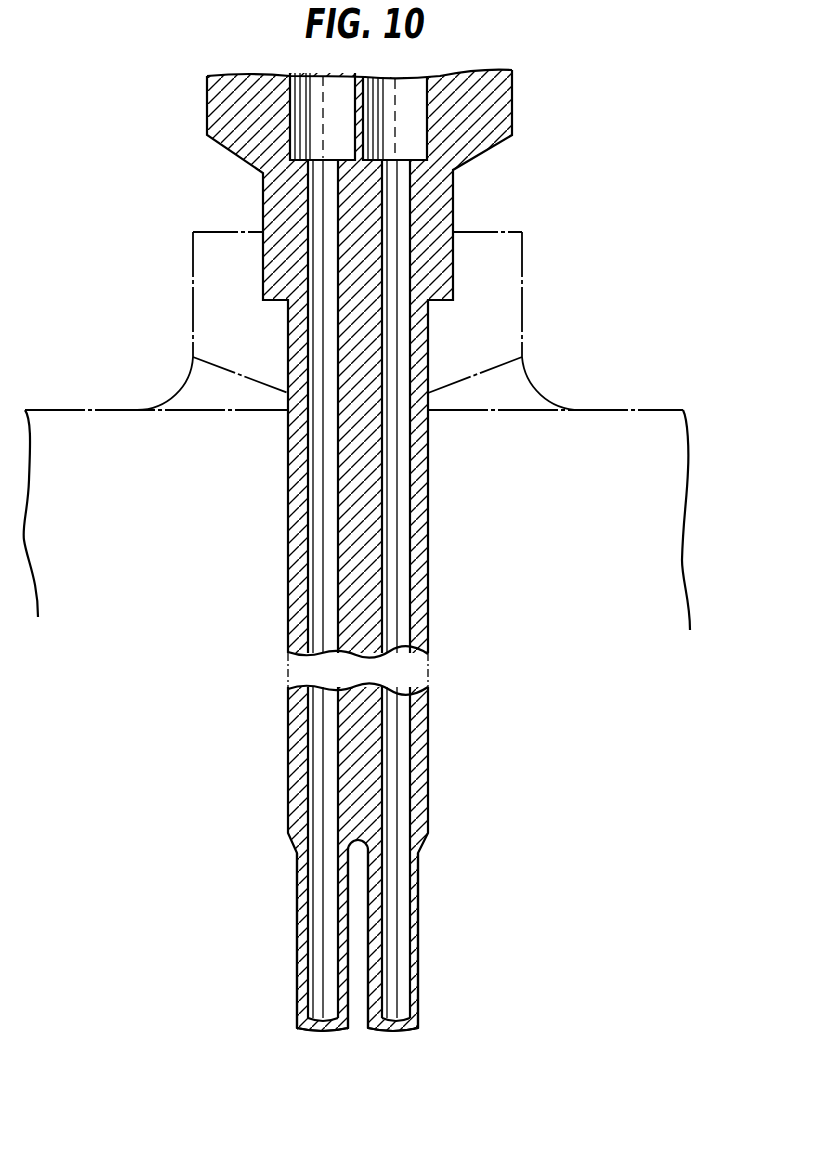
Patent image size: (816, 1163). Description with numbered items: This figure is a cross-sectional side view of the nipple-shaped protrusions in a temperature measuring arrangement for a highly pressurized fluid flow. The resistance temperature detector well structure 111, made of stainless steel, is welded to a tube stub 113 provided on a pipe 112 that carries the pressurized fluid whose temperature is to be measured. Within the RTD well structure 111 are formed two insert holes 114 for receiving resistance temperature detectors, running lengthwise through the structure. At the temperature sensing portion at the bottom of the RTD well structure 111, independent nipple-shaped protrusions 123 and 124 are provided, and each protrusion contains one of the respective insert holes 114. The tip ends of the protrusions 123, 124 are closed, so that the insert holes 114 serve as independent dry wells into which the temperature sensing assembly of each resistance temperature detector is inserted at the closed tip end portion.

The resistance temperature detector well structure 111 is at (480, 387).
The pipe 112 is at (610, 447).
The tube stub 113 is at (522, 232).
The insert holes 114 is at (400, 588).
The nipple-shaped protrusion 123 is at (300, 892).
The nipple-shaped protrusion 124 is at (413, 910).